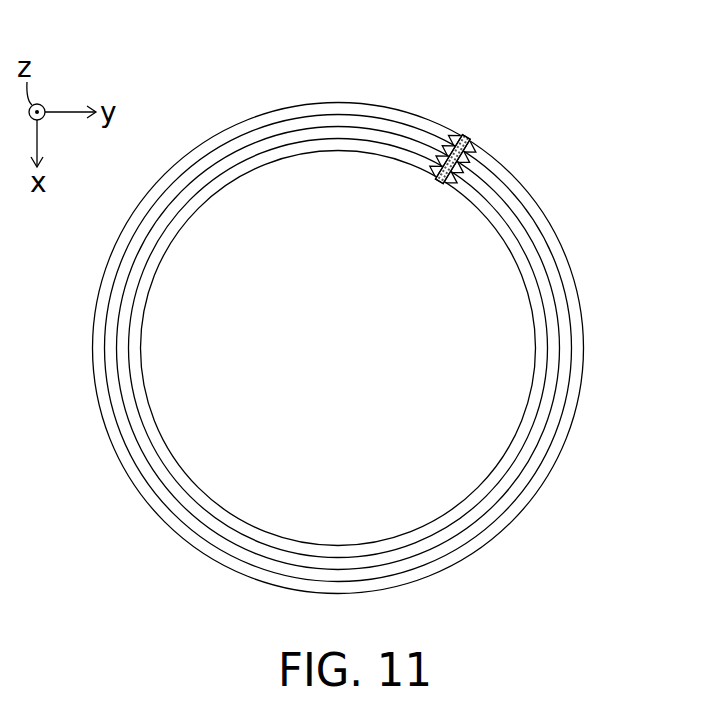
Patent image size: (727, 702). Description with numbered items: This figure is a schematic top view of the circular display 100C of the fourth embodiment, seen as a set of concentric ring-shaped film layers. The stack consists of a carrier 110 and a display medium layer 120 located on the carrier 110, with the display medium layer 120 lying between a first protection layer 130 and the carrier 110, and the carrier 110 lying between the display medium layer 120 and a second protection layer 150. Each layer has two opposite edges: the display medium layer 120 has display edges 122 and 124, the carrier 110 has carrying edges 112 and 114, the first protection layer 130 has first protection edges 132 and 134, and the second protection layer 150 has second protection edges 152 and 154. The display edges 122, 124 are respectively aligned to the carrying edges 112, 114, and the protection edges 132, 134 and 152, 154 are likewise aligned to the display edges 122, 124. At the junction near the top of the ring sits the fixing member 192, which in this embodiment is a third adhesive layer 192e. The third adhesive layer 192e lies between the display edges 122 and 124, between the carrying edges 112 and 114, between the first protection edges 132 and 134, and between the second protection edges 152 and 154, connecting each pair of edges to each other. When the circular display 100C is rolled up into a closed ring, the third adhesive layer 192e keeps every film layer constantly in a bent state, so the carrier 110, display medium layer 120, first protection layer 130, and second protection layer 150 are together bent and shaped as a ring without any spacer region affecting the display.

The circular display 100C is at (660, 611).
The carrier 110 is at (552, 357).
The carrying edge 112 is at (390, 138).
The carrying edge 114 is at (465, 185).
The display medium layer 120 is at (563, 320).
The display edge 122 is at (425, 138).
The display edge 124 is at (465, 170).
The first protection layer 130 is at (576, 287).
The first protection edge 132 is at (450, 136).
The first protection edge 134 is at (474, 163).
The second protection layer 150 is at (530, 402).
The second protection edge 152 is at (390, 158).
The second protection edge 154 is at (460, 187).
The fixing member 192 is at (467, 138).
The third adhesive layer 192e is at (507, 73).